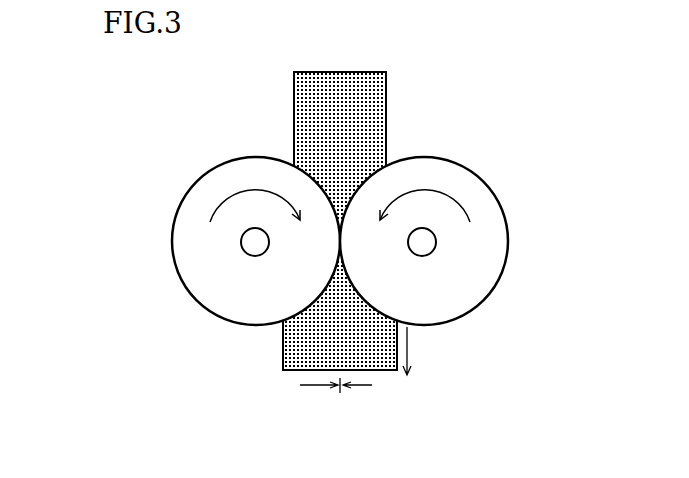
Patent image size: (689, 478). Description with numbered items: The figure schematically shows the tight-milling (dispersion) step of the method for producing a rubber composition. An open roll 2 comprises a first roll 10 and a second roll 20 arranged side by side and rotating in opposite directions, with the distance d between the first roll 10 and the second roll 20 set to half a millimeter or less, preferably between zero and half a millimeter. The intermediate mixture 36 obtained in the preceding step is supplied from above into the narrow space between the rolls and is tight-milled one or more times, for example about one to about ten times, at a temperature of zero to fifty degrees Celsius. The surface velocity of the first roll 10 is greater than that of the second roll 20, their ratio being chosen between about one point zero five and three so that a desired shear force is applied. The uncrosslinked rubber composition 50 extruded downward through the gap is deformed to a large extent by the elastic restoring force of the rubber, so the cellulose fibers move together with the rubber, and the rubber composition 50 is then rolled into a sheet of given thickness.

The open roll 2 is at (322, 241).
The first roll 10 is at (247, 312).
The second roll 20 is at (433, 312).
The intermediate mixture 36 is at (302, 132).
The uncrosslinked rubber composition 50 is at (288, 357).
The distance between the first roll and the second roll d is at (340, 393).